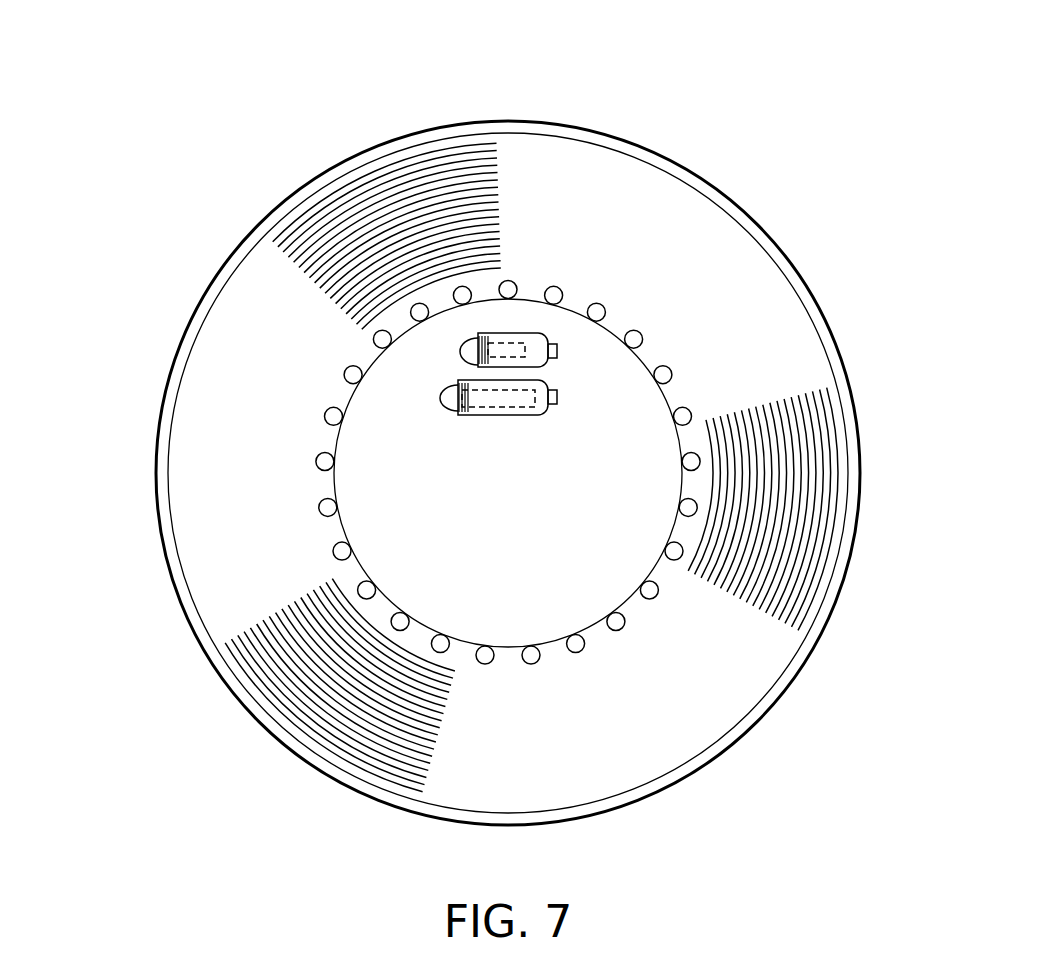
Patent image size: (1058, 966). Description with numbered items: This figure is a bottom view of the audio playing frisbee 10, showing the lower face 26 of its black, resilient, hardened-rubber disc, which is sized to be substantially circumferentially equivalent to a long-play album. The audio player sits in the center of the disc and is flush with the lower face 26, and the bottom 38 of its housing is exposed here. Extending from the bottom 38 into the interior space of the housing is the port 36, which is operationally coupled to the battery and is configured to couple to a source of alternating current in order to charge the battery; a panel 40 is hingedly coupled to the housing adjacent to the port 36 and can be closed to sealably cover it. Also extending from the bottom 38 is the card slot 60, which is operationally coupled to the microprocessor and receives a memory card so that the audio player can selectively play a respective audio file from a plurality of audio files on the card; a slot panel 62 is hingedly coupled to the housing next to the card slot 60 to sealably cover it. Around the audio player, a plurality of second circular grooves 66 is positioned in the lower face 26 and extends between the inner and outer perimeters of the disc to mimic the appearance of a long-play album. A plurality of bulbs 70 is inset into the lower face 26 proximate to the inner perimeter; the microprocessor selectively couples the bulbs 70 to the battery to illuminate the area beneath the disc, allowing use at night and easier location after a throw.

The audio playing frisbee 10 is at (785, 98).
The lower face 26 is at (606, 718).
The port 36 is at (520, 345).
The bottom 38 is at (633, 440).
The panel 40 is at (537, 343).
The card slot 60 is at (483, 397).
The slot panel 62 is at (497, 415).
The second circular grooves 66 is at (767, 471).
The bulbs 70 is at (661, 374).